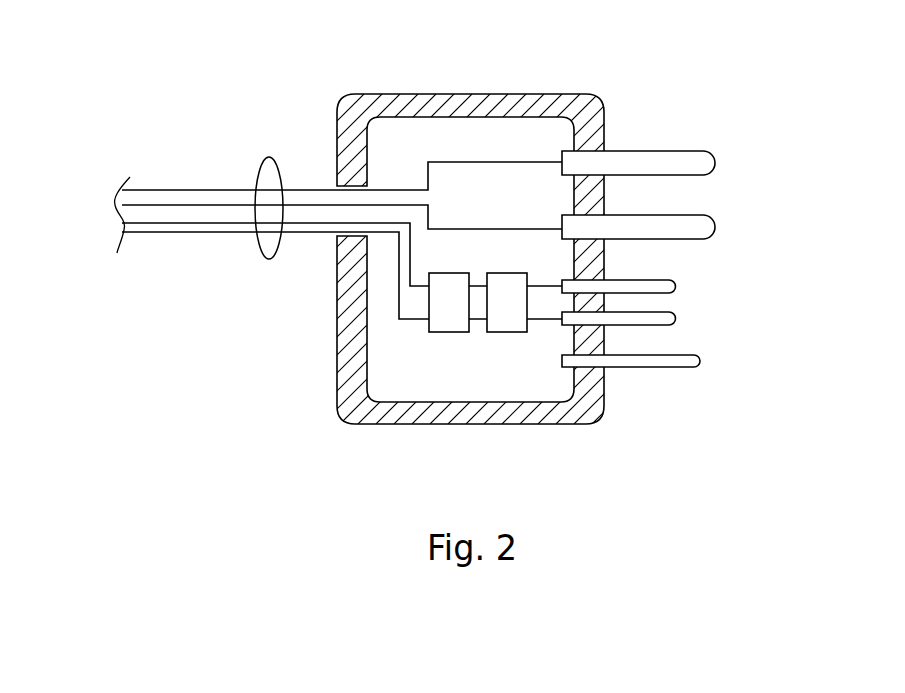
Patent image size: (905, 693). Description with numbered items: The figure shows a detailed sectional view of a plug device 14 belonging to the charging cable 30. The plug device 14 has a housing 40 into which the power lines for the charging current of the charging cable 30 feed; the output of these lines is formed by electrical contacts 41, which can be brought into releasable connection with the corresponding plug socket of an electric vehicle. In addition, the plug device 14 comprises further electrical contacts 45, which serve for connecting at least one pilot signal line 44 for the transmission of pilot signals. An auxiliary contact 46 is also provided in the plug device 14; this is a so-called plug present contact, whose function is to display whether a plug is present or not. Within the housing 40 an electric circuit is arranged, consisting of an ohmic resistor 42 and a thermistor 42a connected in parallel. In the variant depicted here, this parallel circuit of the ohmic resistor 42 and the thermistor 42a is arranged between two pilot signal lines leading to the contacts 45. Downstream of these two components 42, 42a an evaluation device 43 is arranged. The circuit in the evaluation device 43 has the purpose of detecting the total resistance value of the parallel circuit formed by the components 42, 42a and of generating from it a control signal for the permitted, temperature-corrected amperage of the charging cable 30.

The plug device 14 is at (460, 225).
The charging cable 30 is at (269, 158).
The housing 40 is at (470, 94).
The electrical contacts 41 is at (714, 163).
The ohmic resistor 42 is at (508, 338).
The thermistor 42a is at (500, 334).
The evaluation device 43 is at (440, 333).
The pilot signal line 44 is at (198, 235).
The further electrical contacts 45 is at (676, 284).
The auxiliary contact 46 is at (666, 368).